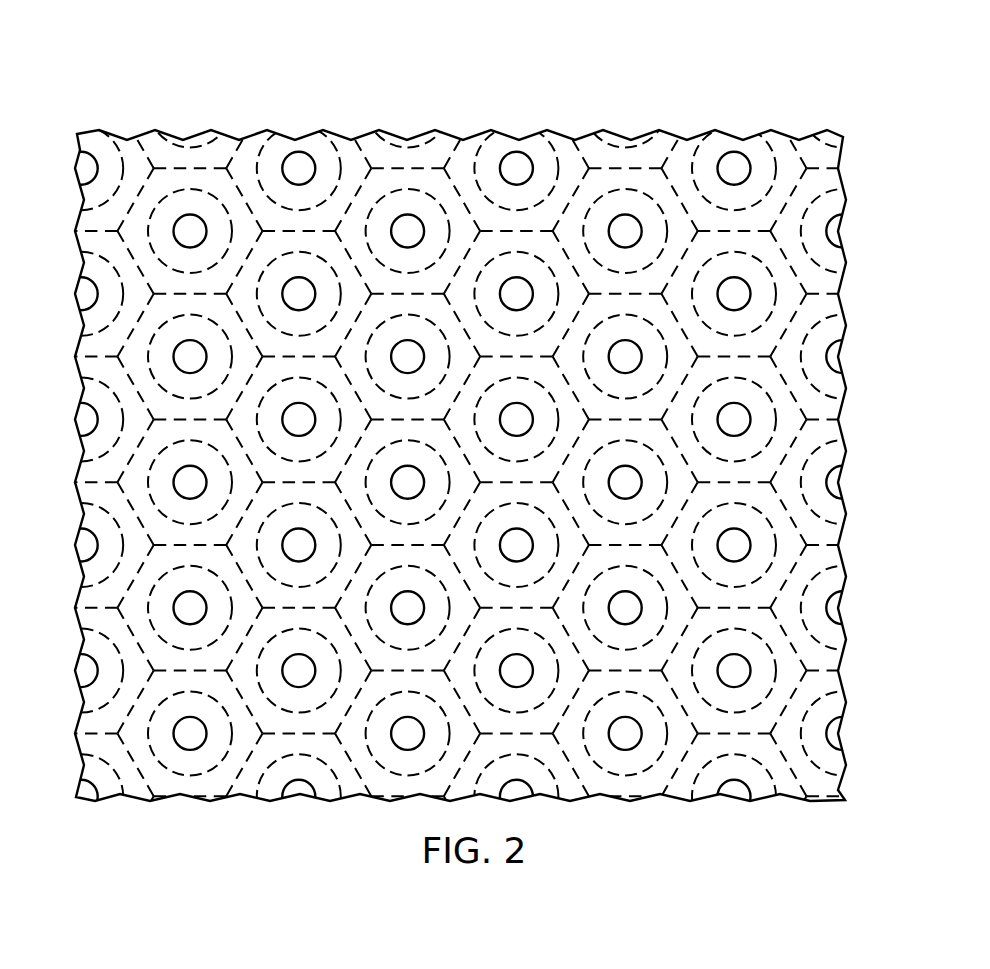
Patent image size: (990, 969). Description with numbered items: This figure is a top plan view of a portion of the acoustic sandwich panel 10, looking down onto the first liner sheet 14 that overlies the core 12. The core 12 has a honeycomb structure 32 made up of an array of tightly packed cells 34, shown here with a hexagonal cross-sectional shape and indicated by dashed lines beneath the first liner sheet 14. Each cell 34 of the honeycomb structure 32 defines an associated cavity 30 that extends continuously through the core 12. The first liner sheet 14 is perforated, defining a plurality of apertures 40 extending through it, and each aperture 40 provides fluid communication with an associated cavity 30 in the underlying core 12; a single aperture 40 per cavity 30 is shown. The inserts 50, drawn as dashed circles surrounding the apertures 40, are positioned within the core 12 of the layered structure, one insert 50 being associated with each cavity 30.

The acoustic sandwich panel 10 is at (887, 110).
The core 12 is at (843, 248).
The first liner sheet 14 is at (844, 138).
The cavity 30 is at (488, 165).
The honeycomb structure 32 is at (750, 92).
The cell 34 is at (585, 148).
The aperture 40 is at (188, 214).
The insert 50 is at (762, 398).